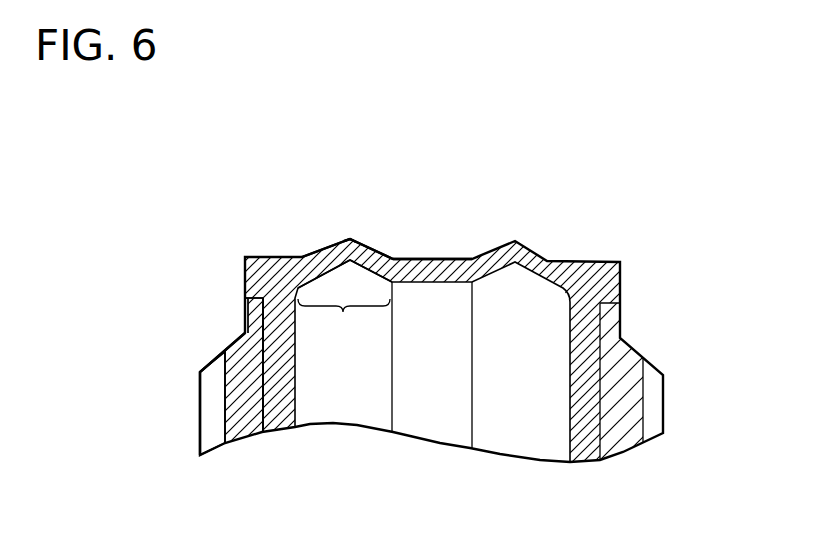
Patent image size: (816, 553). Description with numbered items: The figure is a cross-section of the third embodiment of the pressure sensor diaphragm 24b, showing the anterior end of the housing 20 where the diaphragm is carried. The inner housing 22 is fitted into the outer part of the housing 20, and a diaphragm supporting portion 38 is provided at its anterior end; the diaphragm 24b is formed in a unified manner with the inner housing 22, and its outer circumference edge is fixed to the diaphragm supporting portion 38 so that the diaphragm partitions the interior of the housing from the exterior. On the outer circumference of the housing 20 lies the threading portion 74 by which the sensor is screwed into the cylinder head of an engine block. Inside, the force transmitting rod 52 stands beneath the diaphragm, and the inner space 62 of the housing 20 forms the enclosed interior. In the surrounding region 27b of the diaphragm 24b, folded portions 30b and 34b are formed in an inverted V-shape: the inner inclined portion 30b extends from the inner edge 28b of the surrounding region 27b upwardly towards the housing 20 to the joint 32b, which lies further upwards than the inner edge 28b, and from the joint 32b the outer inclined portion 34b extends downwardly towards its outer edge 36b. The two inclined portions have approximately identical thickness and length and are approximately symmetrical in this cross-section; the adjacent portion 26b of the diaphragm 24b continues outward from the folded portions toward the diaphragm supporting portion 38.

The housing 20 is at (207, 350).
The inner housing 22 is at (277, 433).
The diaphragm 24b is at (424, 237).
The end portion 26b is at (452, 260).
The surrounding region 27b is at (343, 312).
The inner edge 28b is at (393, 258).
The inner inclined portion 30b is at (368, 250).
The joint 32b is at (353, 240).
The outer inclined portion 34b is at (335, 245).
The outer edge 36b is at (300, 258).
The diaphragm supporting portion 38 is at (248, 275).
The force transmitting rod 52 is at (432, 423).
The inner space 62 is at (247, 430).
The threading portion 74 is at (210, 443).